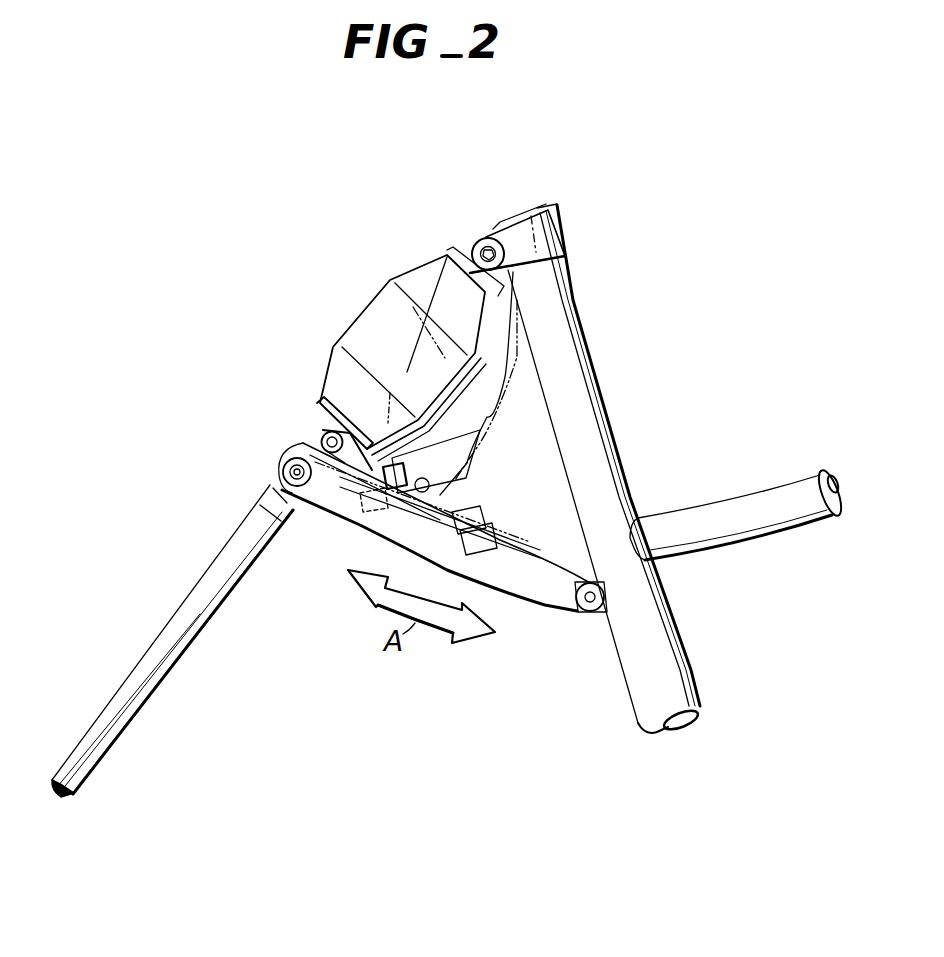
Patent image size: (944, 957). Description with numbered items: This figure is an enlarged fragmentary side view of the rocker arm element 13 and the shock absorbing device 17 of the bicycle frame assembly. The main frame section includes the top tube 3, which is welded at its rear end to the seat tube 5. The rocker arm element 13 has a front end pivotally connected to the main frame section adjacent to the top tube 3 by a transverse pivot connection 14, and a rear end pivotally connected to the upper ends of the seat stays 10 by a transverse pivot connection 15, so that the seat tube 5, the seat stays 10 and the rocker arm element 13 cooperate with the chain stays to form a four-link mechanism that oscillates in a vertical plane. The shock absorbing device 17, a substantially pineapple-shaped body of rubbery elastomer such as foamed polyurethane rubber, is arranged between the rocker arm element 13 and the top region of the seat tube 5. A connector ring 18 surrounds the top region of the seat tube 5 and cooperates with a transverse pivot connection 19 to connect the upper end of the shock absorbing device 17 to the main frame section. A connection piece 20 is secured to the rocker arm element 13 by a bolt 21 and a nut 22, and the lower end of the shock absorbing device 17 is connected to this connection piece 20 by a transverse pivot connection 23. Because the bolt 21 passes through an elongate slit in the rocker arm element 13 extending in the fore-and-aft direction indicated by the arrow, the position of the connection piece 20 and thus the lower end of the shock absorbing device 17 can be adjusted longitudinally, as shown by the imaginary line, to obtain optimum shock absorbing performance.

The top tube 3 is at (793, 490).
The seat tube 5 is at (603, 410).
The seat stays 10 is at (188, 607).
The rocker arm element 13 is at (530, 600).
The transverse pivot connection 14 is at (590, 606).
The transverse pivot connection 15 is at (280, 472).
The shock absorbing device 17 is at (370, 322).
The connector ring 18 is at (561, 230).
The transverse pivot connection 19 is at (485, 240).
The connection piece 20 is at (292, 443).
The bolt 21 is at (412, 455).
The nut 22 is at (380, 506).
The transverse pivot connection 23 is at (322, 426).